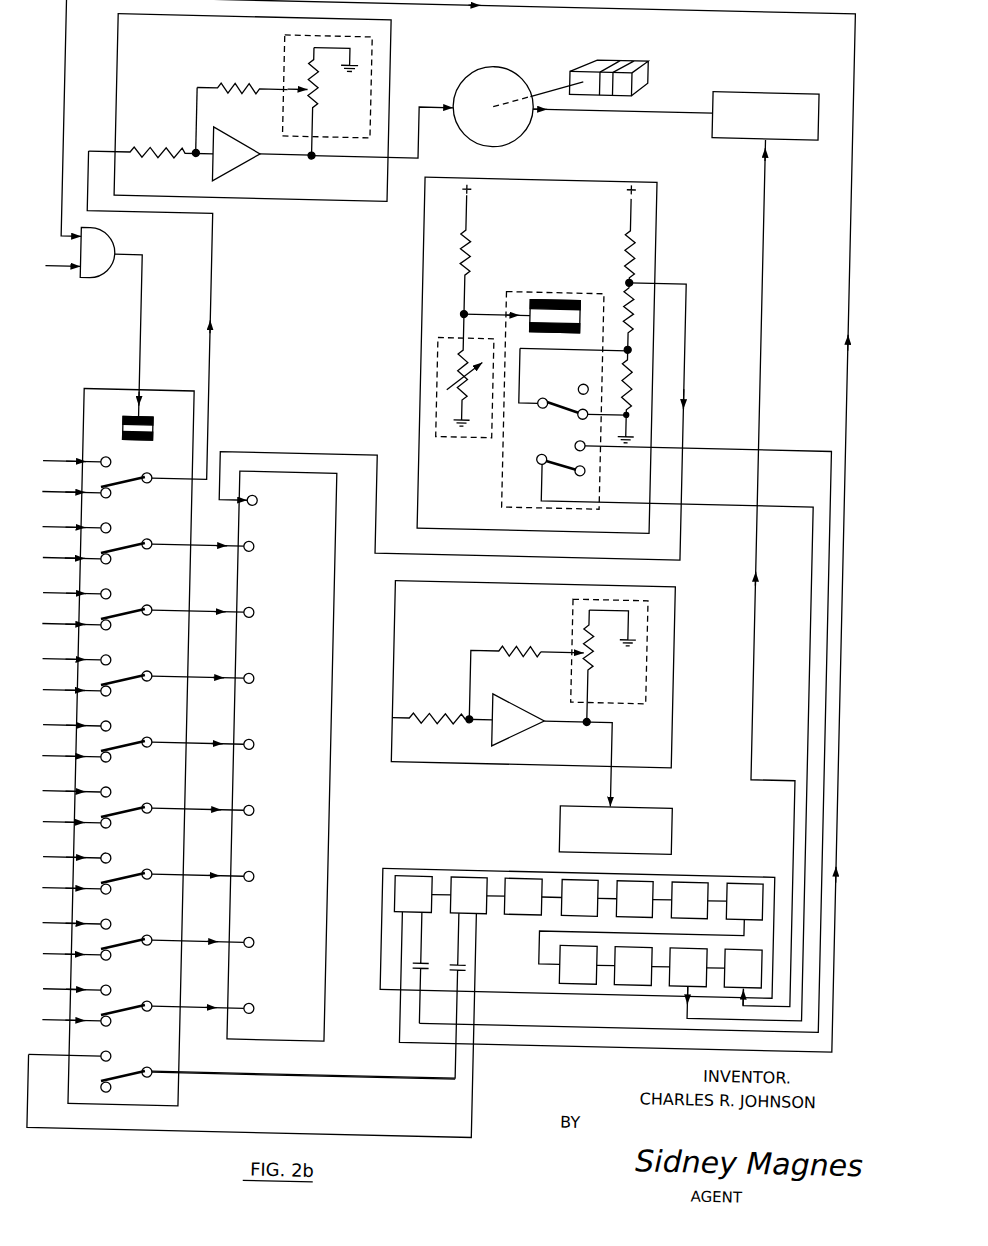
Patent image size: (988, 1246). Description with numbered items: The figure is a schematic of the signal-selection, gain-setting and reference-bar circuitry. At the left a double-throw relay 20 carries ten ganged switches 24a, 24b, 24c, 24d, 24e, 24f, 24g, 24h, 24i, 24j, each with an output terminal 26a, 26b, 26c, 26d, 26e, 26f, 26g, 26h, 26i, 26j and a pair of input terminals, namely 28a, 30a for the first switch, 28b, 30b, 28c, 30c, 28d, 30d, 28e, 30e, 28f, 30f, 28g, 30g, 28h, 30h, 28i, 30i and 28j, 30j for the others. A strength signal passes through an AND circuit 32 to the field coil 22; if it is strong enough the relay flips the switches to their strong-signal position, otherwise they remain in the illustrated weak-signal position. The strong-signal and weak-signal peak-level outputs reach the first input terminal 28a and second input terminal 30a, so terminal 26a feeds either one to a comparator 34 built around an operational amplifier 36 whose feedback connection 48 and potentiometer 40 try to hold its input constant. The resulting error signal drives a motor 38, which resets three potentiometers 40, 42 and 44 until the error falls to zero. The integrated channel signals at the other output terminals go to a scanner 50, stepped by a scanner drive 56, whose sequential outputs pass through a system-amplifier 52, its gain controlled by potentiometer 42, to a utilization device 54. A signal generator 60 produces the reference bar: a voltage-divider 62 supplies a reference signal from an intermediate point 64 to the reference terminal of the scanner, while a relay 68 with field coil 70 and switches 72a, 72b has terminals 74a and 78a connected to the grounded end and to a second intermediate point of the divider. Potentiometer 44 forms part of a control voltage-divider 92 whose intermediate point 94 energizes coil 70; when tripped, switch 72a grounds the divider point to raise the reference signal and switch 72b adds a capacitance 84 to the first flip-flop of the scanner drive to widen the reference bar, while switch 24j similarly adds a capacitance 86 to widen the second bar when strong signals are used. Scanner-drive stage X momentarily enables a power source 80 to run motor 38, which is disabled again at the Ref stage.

The relay 20 is at (117, 397).
The field coil 22 is at (158, 423).
The relay switch 24a is at (124, 488).
The relay switch 24b is at (126, 554).
The relay switch 24c is at (127, 620).
The relay switch 24d is at (129, 686).
The relay switch 24e is at (130, 752).
The relay switch 24f is at (132, 818).
The relay switch 24g is at (133, 884).
The relay switch 24h is at (135, 950).
The relay switch 24i is at (136, 1016).
The relay switch 24j is at (138, 1082).
The output terminal 26a is at (148, 490).
The output terminal 26b is at (150, 556).
The output terminal 26c is at (151, 622).
The output terminal 26d is at (153, 688).
The output terminal 26e is at (154, 754).
The output terminal 26f is at (156, 820).
The output terminal 26g is at (157, 886).
The output terminal 26h is at (159, 952).
The output terminal 26i is at (160, 1018).
The output terminal 26j is at (162, 1084).
The input terminal 28a is at (101, 466).
The input terminal 28b is at (102, 532).
The input terminal 28c is at (104, 598).
The input terminal 28d is at (105, 664).
The input terminal 28e is at (107, 730).
The input terminal 28f is at (108, 796).
The input terminal 28g is at (110, 862).
The input terminal 28h is at (111, 928).
The input terminal 28i is at (113, 994).
The input terminal 28j is at (114, 1060).
The input terminal 30a is at (108, 505).
The input terminal 30b is at (109, 571).
The input terminal 30c is at (110, 637).
The input terminal 30d is at (112, 703).
The input terminal 30e is at (114, 769).
The input terminal 30f is at (115, 835).
The input terminal 30g is at (116, 901).
The input terminal 30h is at (118, 967).
The input terminal 30i is at (120, 1033).
The input terminal 30j is at (121, 1099).
The AND circuit 32 is at (102, 256).
The comparator 34 is at (378, 40).
The operational amplifier 36 is at (240, 158).
The motor 38 is at (519, 139).
The potentiometer 40 is at (276, 64).
The potentiometer 42 is at (588, 60).
The potentiometer 44 is at (636, 75).
The feedback connection 48 is at (228, 94).
The scanner 50 is at (338, 826).
The system-amplifier 52 is at (596, 768).
The utilization device 54 is at (677, 804).
The scanner drive 56 is at (401, 986).
The signal generator 60 is at (413, 348).
The voltage-divider 62 is at (616, 232).
The intermediate point 64 is at (618, 278).
The relay 68 is at (573, 292).
The field coil 70 is at (535, 298).
The relay switch 72a is at (567, 400).
The relay switch 72b is at (566, 470).
The terminal 74a is at (578, 418).
The terminal 78a is at (537, 408).
The power source 80 is at (764, 87).
The capacitance 84 is at (431, 962).
The capacitance 86 is at (323, 992).
The control voltage-divider 92 is at (468, 232).
The intermediate point 94 is at (455, 313).